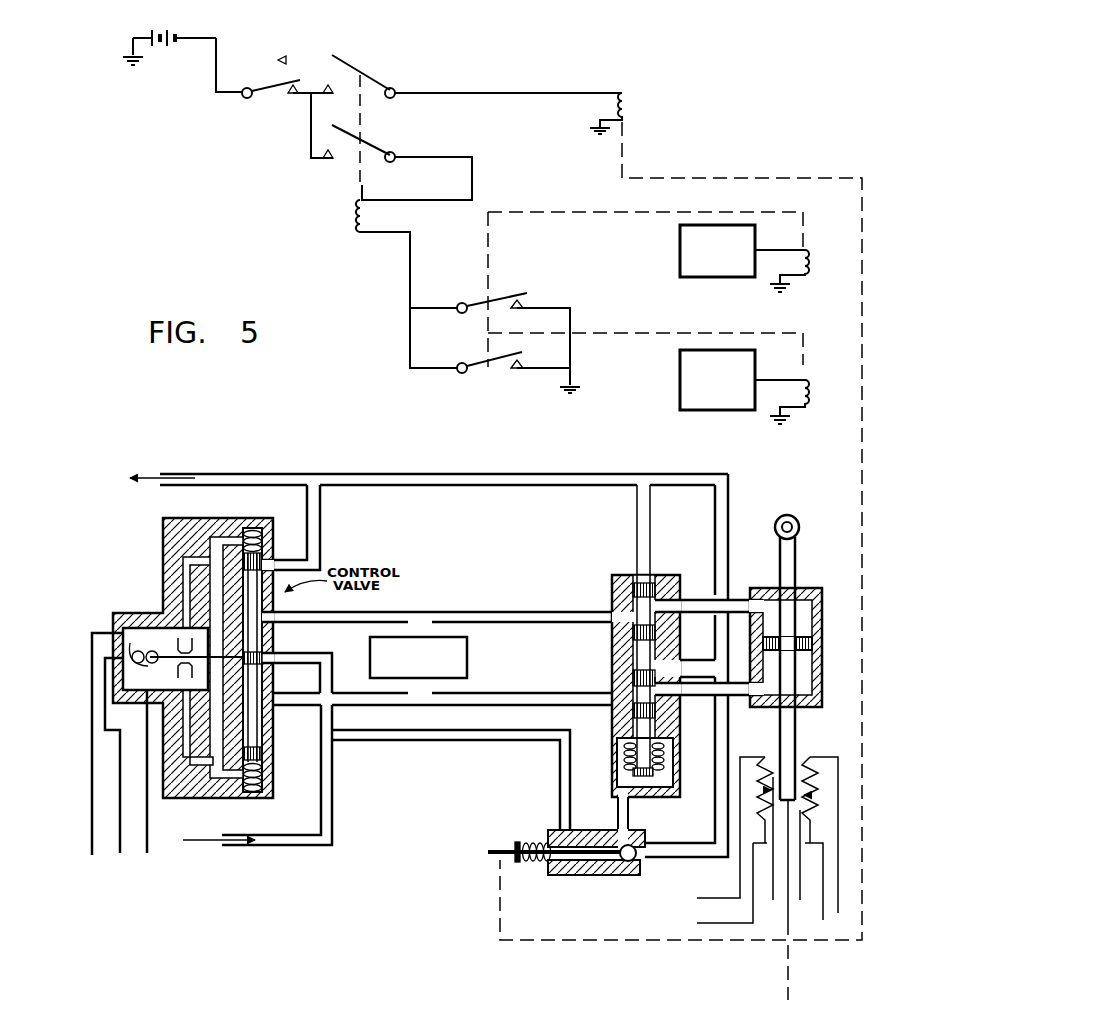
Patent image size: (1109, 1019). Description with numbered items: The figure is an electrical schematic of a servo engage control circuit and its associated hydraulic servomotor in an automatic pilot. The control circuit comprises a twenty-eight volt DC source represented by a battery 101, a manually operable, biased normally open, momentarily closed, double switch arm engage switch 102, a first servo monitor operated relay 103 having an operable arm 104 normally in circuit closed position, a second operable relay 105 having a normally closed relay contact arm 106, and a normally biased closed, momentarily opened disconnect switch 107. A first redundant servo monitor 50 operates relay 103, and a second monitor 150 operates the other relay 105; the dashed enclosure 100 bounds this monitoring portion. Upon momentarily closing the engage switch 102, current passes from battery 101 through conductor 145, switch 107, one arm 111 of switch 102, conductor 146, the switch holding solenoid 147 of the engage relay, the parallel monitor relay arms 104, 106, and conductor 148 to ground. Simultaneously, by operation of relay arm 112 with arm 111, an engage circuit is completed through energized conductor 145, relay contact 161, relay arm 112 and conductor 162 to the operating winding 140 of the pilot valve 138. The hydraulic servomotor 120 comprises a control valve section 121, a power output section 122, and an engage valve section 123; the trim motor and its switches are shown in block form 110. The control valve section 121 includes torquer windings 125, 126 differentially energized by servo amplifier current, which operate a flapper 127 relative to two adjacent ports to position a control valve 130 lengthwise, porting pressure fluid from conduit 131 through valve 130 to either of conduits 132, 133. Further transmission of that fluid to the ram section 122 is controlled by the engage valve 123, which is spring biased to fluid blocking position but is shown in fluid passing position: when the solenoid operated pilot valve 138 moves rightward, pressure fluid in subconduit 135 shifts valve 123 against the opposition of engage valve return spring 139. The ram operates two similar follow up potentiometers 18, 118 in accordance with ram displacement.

The battery 101 is at (168, 36).
The conductor 145 is at (219, 38).
The disconnect switch 107 is at (273, 82).
The relay contact 161 is at (312, 85).
The engage switch 102 is at (344, 44).
The relay arm 112 is at (374, 80).
The conductor 162 is at (463, 92).
The winding 140 is at (627, 108).
The switch arm 111 is at (378, 148).
The conductor 146 is at (474, 165).
The switch holding solenoid 147 is at (356, 232).
The servo control system 100 is at (653, 204).
The first servo monitor operated relay 103 is at (845, 231).
The first redundant servo monitor 50 is at (680, 241).
The operable arm 104 is at (525, 296).
The conductor 148 is at (572, 318).
The relay contact arm 106 is at (520, 358).
The second operable relay 105 is at (848, 361).
The second servo monitor 150 is at (680, 372).
The hydraulic servomotor 120 is at (547, 570).
The control valve section 121 is at (370, 519).
The power output section 122 is at (783, 504).
The torquer winding 125 is at (134, 652).
The torquer winding 126 is at (150, 652).
The flapper 127 is at (165, 650).
The control valve 130 is at (278, 637).
The conduit 132 is at (385, 611).
The conduit 133 is at (358, 690).
The trim motor block 110 is at (470, 652).
The engage valve 123 is at (590, 681).
The subconduit 135 is at (435, 730).
The engage valve return spring 139 is at (656, 768).
The conduit 131 is at (253, 848).
The pilot valve 138 is at (614, 878).
The follow up potentiometer 18 is at (770, 865).
The follow up potentiometer 118 is at (806, 845).